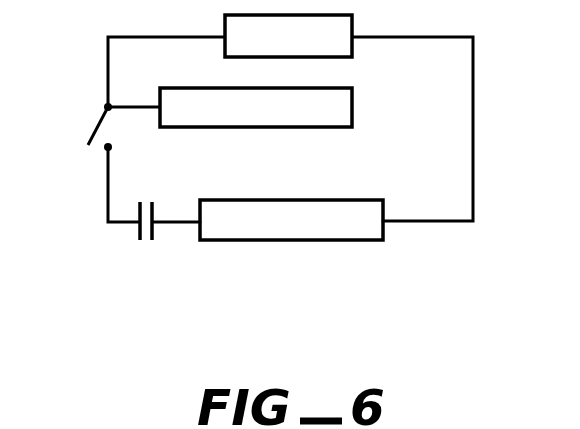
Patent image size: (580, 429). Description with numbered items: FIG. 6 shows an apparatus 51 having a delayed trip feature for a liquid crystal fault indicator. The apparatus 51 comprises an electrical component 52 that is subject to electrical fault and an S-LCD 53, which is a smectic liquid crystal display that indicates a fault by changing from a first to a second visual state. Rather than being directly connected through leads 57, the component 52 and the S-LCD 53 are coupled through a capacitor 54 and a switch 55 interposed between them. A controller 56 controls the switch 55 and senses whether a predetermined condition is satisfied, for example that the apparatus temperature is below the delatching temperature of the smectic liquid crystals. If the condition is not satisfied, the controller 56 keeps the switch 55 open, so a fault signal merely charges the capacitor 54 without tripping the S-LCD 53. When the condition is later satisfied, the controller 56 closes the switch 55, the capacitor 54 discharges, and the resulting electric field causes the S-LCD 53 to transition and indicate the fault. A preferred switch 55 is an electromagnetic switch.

The apparatus 51 is at (505, 203).
The electrical component 52 is at (283, 240).
The S-LCD 53 is at (355, 48).
The capacitor 54 is at (155, 212).
The switch 55 is at (90, 130).
The controller 56 is at (198, 88).
The leads 57 is at (187, 225).